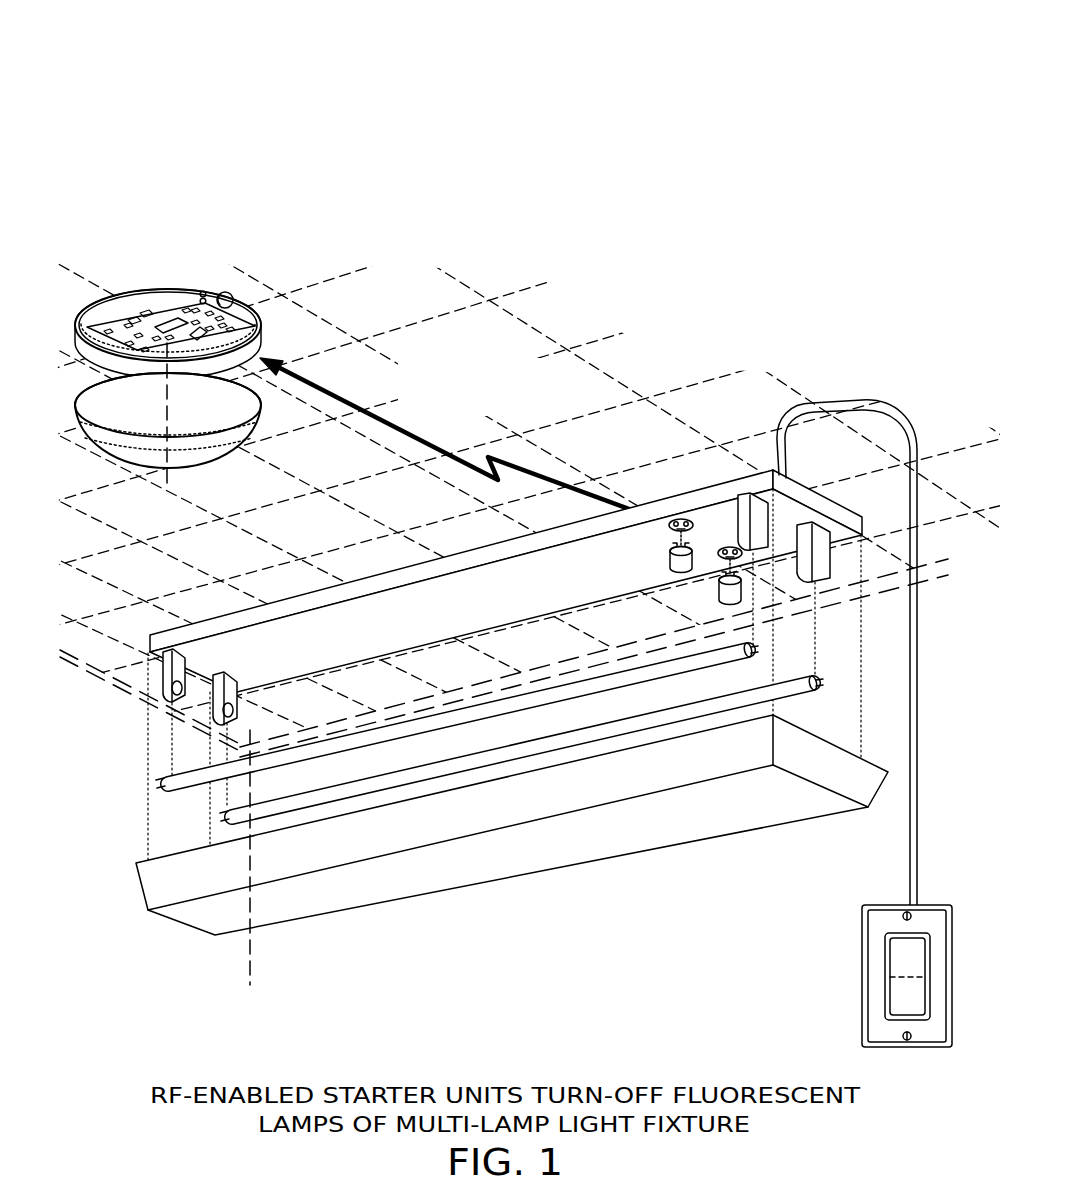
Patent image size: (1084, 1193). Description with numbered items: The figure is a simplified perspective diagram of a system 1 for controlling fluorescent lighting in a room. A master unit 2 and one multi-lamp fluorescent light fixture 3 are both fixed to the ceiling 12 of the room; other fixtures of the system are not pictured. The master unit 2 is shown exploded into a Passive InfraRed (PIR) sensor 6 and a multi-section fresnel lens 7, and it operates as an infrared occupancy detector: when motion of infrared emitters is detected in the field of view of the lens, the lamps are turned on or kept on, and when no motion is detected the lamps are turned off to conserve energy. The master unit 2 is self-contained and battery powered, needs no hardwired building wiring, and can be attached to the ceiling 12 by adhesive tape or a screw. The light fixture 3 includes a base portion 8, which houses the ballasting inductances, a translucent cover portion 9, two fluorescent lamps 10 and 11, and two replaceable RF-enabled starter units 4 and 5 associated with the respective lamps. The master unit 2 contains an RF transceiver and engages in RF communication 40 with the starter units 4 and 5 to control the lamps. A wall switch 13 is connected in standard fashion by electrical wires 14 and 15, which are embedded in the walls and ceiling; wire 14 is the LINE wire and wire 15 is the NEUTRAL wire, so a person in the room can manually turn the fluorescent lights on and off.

The system 1 is at (665, 60).
The master unit 2 is at (173, 272).
The multi-lamp fluorescent light fixture 3 is at (137, 828).
The starter unit 4 is at (698, 552).
The starter unit 5 is at (747, 587).
The Passive InfraRed (PIR) sensor 6 is at (167, 325).
The multi-section fresnel lens 7 is at (150, 432).
The base portion 8 is at (397, 623).
The translucent cover portion 9 is at (375, 889).
The fluorescent lamp 10 is at (703, 668).
The fluorescent lamp 11 is at (783, 691).
The ceiling 12 is at (318, 543).
The wall switch 13 is at (845, 977).
The electrical wire 14 is at (909, 831).
The electrical wire 15 is at (916, 869).
The RF communication 40 is at (447, 453).